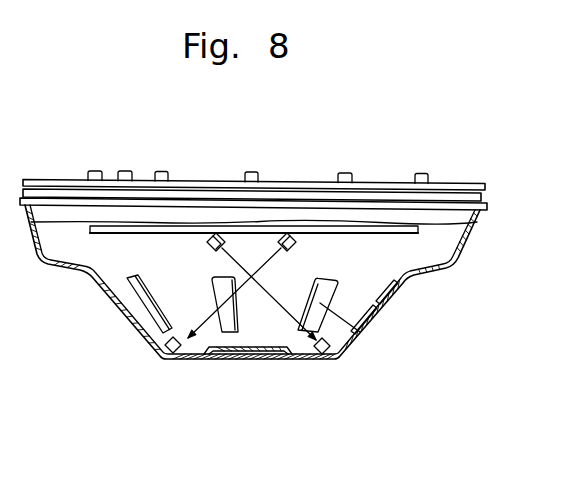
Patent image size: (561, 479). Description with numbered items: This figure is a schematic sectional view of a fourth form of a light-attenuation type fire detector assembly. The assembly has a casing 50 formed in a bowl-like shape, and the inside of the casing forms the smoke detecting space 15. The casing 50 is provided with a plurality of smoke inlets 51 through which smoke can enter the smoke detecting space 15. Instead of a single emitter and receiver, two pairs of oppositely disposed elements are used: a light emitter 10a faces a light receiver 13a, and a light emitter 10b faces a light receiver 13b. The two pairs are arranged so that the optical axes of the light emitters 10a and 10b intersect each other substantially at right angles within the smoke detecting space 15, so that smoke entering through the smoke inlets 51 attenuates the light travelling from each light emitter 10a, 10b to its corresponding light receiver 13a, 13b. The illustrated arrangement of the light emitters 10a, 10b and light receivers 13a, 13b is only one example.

The light emitter 10a is at (209, 241).
The light emitter 10b is at (296, 243).
The light receiver 13a is at (322, 358).
The light receiver 13b is at (171, 358).
The smoke detecting space 15 is at (268, 328).
The casing 50 is at (445, 269).
The smoke inlets 51 is at (385, 298).